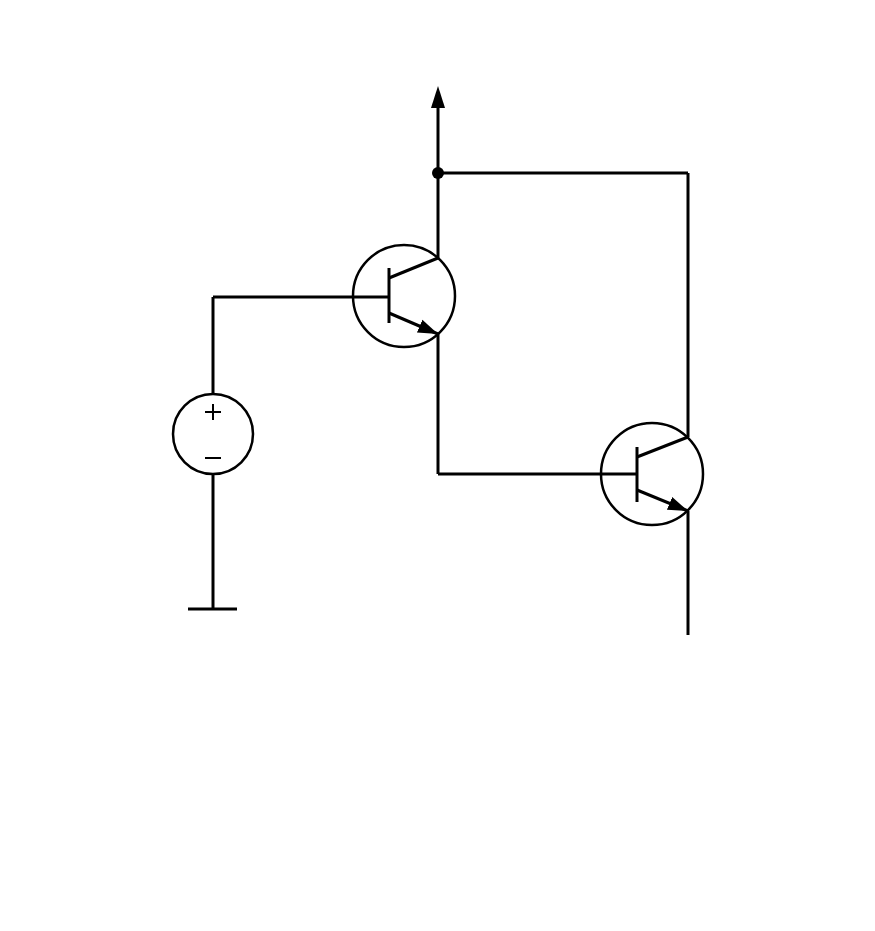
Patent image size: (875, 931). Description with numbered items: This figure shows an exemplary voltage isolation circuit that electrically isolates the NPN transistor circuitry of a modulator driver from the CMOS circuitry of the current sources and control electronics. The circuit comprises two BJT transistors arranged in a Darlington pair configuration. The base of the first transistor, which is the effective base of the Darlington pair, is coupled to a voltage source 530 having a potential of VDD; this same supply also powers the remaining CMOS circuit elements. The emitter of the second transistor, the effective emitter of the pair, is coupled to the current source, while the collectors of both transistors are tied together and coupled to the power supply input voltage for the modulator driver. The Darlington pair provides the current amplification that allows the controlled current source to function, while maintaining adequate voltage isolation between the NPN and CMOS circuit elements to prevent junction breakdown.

The voltage source VDD 530 is at (177, 420).